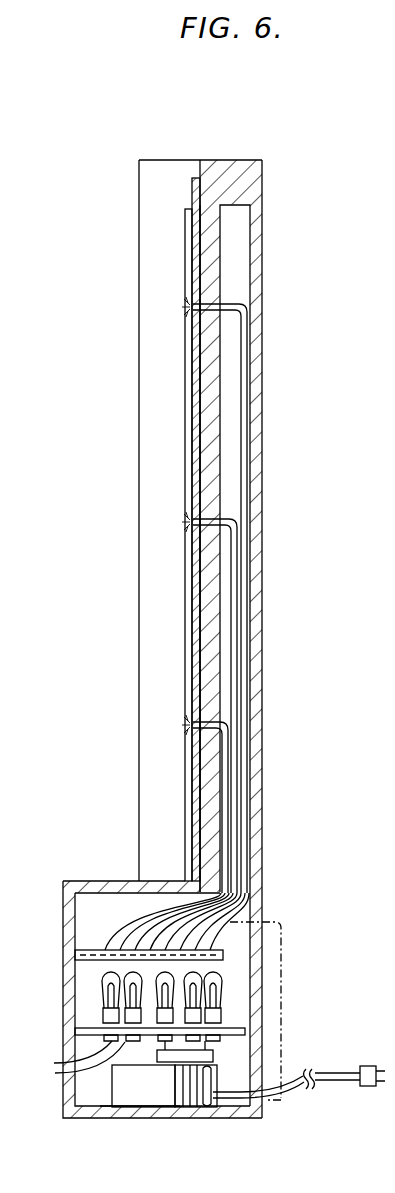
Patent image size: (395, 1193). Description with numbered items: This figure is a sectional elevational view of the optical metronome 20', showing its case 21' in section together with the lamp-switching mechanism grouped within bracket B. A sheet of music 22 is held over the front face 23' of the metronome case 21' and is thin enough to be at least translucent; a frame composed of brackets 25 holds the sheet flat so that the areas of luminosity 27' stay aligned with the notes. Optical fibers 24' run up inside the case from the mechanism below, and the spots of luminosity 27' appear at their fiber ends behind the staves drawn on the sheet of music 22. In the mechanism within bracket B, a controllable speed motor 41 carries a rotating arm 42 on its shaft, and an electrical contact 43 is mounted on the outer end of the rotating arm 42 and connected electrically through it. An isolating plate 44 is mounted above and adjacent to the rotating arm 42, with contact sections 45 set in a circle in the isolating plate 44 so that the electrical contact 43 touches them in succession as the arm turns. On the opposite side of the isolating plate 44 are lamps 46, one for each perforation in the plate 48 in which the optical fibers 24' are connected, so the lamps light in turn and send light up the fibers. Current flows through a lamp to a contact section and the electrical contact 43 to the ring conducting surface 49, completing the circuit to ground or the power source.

The optical metronome 20' is at (158, 520).
The metronome case 21' is at (251, 616).
The sheet of music 22 is at (200, 382).
The front face 23' is at (180, 529).
The optical fibers 24' is at (255, 598).
The brackets 25 is at (185, 604).
The luminosity 27' is at (170, 501).
The controllable speed motor 41 is at (161, 1097).
The rotating arm 42 is at (204, 1108).
The electrical contact 43 is at (207, 1044).
The isolating plate 44 is at (97, 1028).
The contact sections 45 is at (54, 1063).
The lamps 46 is at (108, 982).
The plate 48 is at (106, 950).
The ring conducting surface 49 is at (115, 1080).
The bracket B is at (269, 1011).